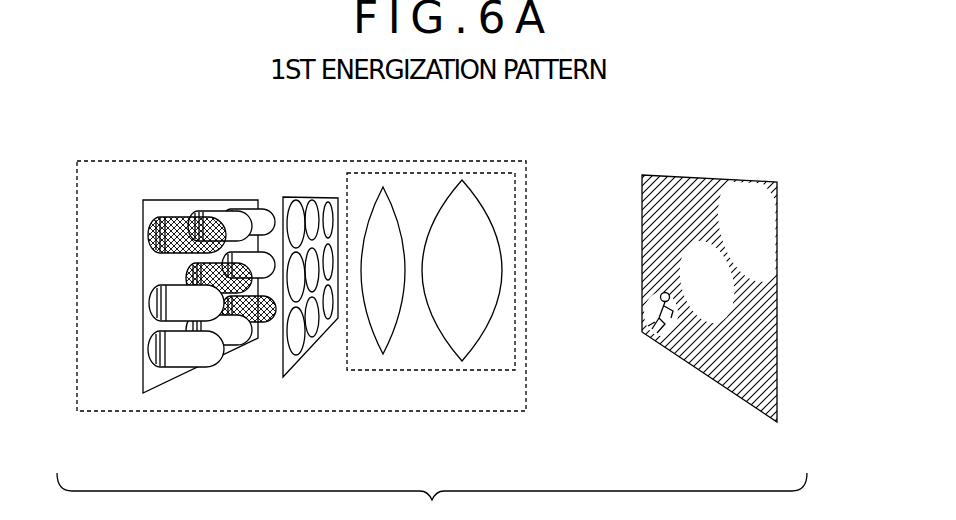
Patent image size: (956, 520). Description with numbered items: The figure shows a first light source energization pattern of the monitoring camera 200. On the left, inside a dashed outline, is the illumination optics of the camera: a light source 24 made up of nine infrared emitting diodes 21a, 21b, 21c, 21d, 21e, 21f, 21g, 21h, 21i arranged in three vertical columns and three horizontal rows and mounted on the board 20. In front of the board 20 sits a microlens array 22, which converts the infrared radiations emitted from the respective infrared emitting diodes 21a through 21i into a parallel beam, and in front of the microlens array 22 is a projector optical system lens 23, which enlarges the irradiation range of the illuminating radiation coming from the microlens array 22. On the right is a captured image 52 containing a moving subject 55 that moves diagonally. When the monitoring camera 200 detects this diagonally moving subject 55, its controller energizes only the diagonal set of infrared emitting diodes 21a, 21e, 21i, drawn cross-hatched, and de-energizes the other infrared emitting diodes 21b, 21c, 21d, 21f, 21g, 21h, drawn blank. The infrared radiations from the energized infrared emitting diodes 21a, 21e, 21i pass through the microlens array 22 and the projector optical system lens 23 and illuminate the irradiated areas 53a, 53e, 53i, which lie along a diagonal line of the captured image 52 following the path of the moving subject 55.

The board 20 is at (143, 373).
The monitoring camera 200 is at (373, 159).
The infrared emitting diode 21a is at (184, 215).
The infrared emitting diode 21b is at (226, 216).
The infrared emitting diode 21c is at (258, 214).
The infrared emitting diode 21d is at (178, 305).
The infrared emitting diode 21e is at (196, 268).
The infrared emitting diode 21f is at (252, 257).
The infrared emitting diode 21g is at (205, 360).
The infrared emitting diode 21h is at (237, 333).
The infrared emitting diode 21i is at (270, 325).
The microlens array 22 is at (313, 348).
The projector optical system lens 23 is at (387, 371).
The light source 24 is at (164, 388).
The captured image 52 is at (681, 360).
The irradiated area 53a is at (762, 212).
The irradiated area 53e is at (710, 290).
The irradiated area 53i is at (672, 332).
The moving subject 55 is at (659, 298).